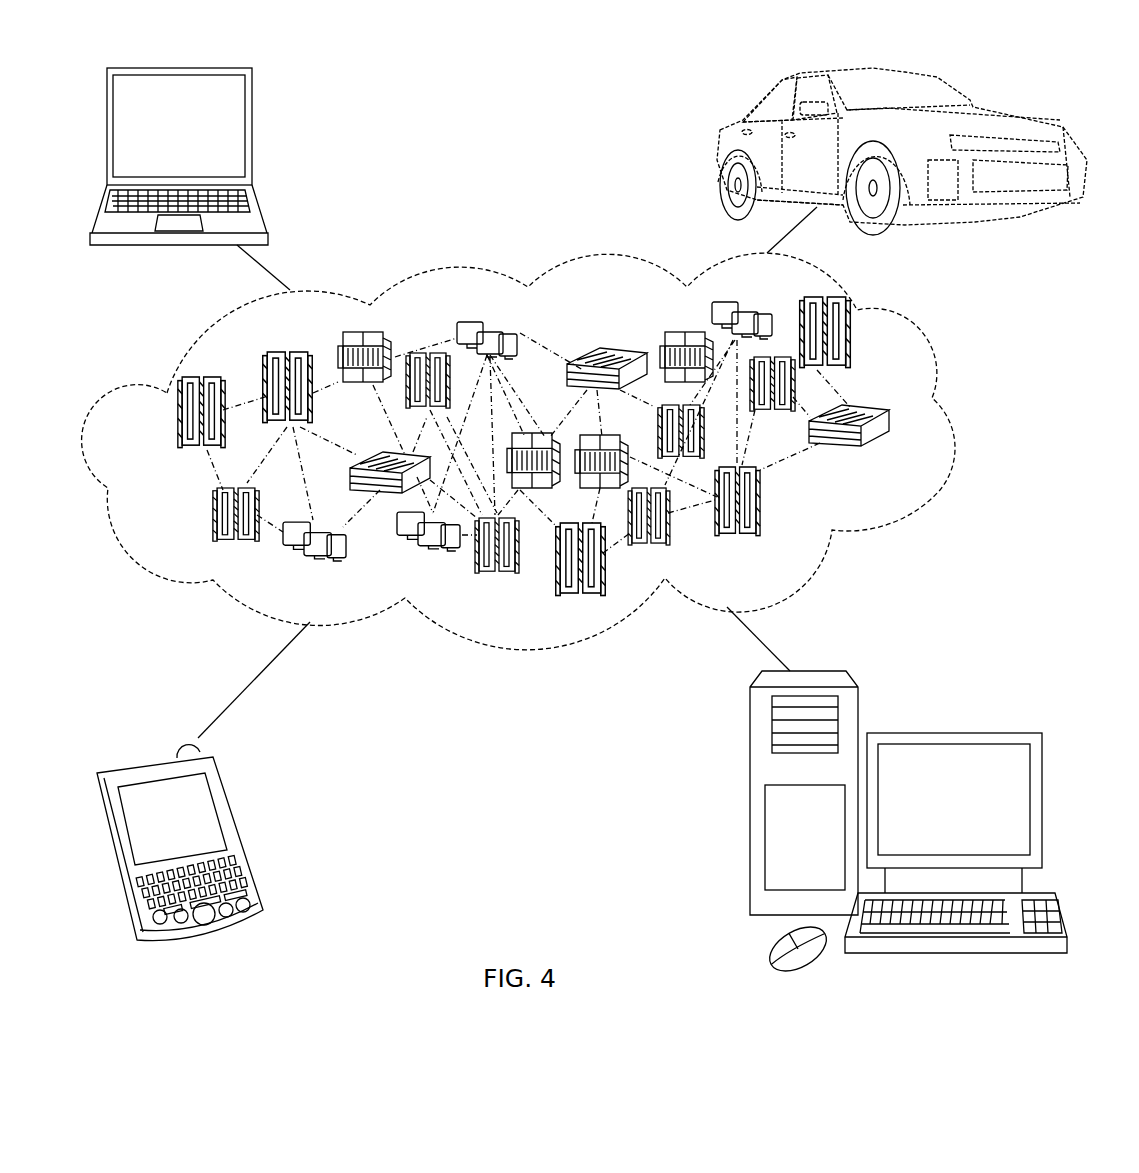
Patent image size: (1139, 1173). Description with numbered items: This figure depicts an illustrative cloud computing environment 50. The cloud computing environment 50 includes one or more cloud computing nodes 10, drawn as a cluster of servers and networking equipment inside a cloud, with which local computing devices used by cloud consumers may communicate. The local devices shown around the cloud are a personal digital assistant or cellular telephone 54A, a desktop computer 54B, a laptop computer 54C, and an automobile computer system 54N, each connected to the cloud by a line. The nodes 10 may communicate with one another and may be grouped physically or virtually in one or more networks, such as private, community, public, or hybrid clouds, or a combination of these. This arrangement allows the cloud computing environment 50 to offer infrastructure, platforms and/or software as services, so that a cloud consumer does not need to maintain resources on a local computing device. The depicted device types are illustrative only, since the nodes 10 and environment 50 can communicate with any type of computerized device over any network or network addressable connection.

The cloud computing nodes 10 is at (905, 460).
The cloud computing environment 50 is at (953, 424).
The personal digital assistant (PDA) or cellular telephone 54A is at (245, 833).
The desktop computer 54B is at (950, 733).
The laptop computer 54C is at (252, 132).
The automobile computer system 54N is at (718, 150).